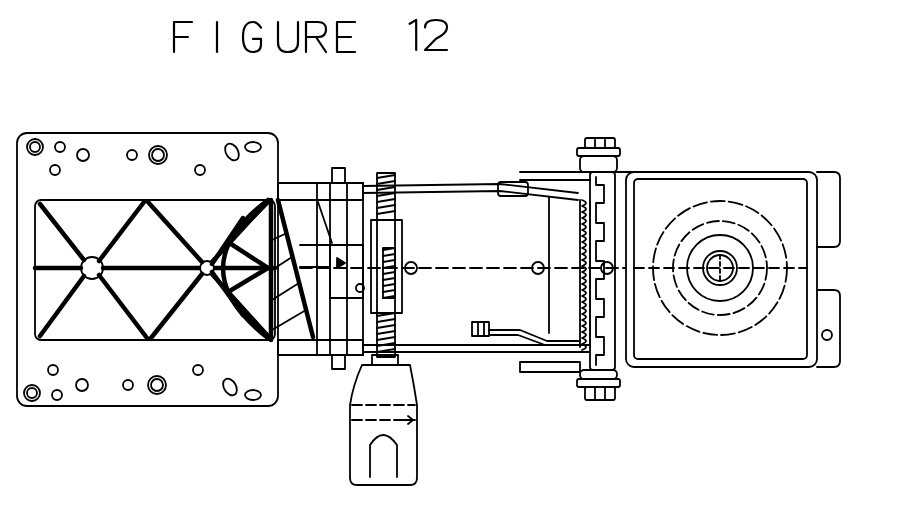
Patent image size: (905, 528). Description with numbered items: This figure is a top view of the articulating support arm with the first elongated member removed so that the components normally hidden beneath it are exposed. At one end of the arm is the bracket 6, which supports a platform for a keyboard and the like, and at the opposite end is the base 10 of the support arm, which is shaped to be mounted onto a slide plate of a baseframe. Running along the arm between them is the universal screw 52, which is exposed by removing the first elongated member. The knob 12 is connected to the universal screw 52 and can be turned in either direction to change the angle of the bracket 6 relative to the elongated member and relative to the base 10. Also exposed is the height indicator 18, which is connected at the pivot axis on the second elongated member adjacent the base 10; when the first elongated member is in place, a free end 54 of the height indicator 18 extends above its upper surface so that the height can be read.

The bracket 6 is at (113, 155).
The universal screw 52 is at (433, 231).
The knob 12 is at (433, 425).
The free end 54 is at (466, 369).
The height indicator 18 is at (534, 385).
The base 10 is at (733, 217).